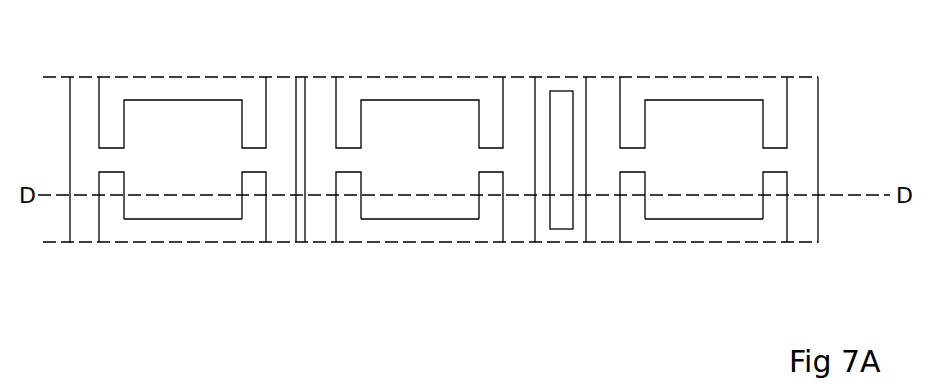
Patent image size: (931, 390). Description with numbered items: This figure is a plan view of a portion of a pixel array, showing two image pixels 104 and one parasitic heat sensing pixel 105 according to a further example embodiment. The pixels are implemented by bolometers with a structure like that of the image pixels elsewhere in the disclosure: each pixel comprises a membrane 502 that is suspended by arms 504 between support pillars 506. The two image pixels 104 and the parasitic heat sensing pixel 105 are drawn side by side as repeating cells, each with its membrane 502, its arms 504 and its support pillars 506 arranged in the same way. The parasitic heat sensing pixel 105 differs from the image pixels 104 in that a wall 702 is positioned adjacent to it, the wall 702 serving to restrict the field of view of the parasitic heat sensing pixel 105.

The image pixel 104 is at (200, 78).
The parasitic heat sensing pixel 105 is at (702, 77).
The support pillars 506 is at (85, 86).
The membrane 502 is at (176, 207).
The arms 504 is at (110, 158).
The wall 702 is at (559, 210).